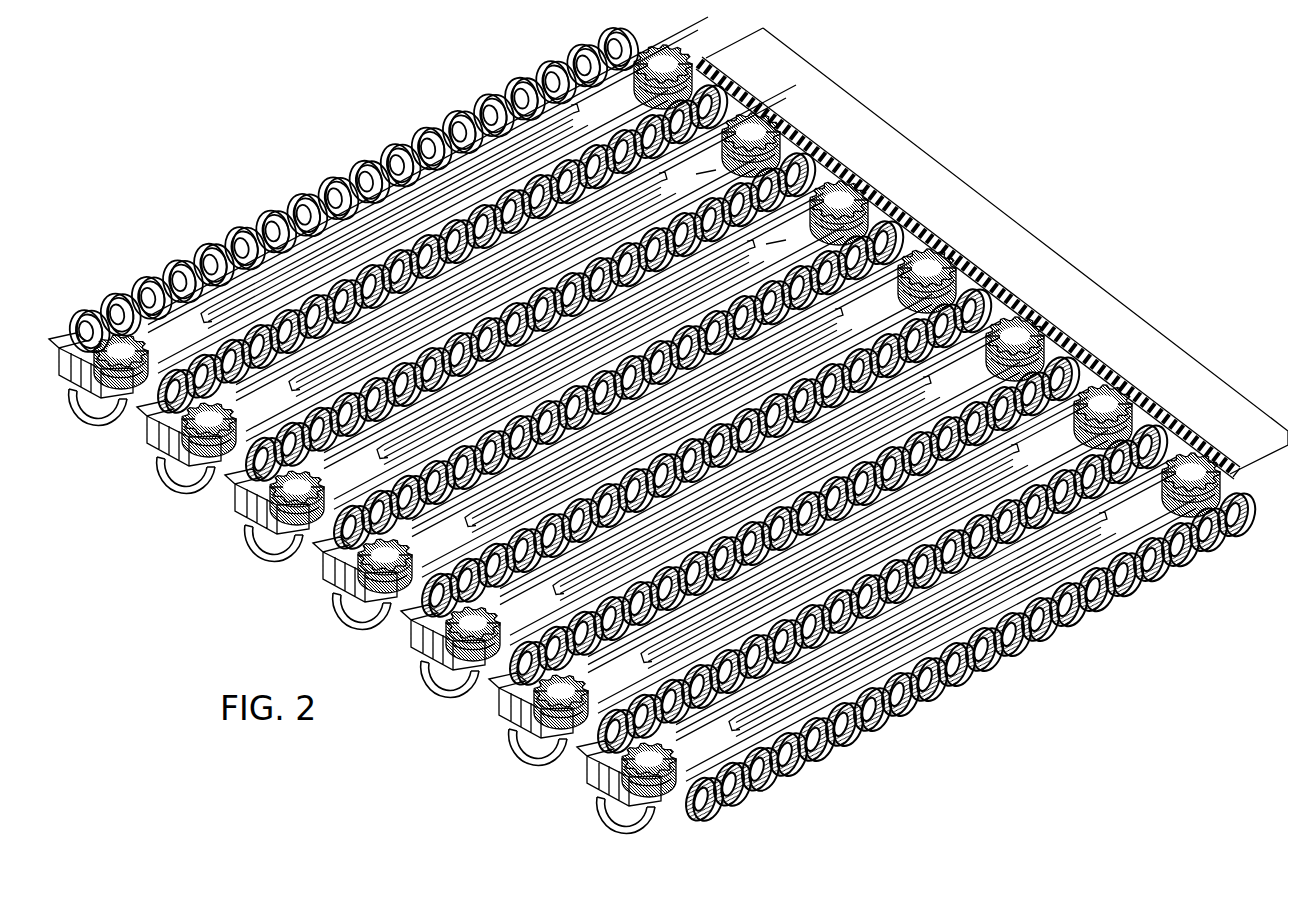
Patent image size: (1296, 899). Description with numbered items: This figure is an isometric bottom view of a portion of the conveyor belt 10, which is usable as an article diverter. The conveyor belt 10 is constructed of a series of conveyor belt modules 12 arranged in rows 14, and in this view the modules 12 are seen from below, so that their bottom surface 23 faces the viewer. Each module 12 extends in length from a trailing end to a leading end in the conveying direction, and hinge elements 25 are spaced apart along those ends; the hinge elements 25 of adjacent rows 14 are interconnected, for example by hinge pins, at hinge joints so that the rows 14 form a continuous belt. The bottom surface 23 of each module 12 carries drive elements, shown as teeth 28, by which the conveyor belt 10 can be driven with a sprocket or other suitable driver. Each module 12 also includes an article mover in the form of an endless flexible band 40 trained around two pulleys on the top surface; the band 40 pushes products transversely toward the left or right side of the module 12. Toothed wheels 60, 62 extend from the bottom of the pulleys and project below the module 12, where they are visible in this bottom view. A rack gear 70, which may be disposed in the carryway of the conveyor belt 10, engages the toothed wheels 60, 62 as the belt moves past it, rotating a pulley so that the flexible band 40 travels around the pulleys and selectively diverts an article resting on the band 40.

The conveyor belt 10 is at (417, 72).
The conveyor belt module 12 is at (702, 747).
The row 14 is at (555, 785).
The bottom surface 23 is at (728, 131).
The hinge element 25 is at (963, 698).
The teeth 28 is at (780, 688).
The endless flexible band 40 is at (614, 821).
The toothed wheel 60 is at (927, 281).
The toothed wheel 62 is at (385, 566).
The rack gear 70 is at (860, 145).